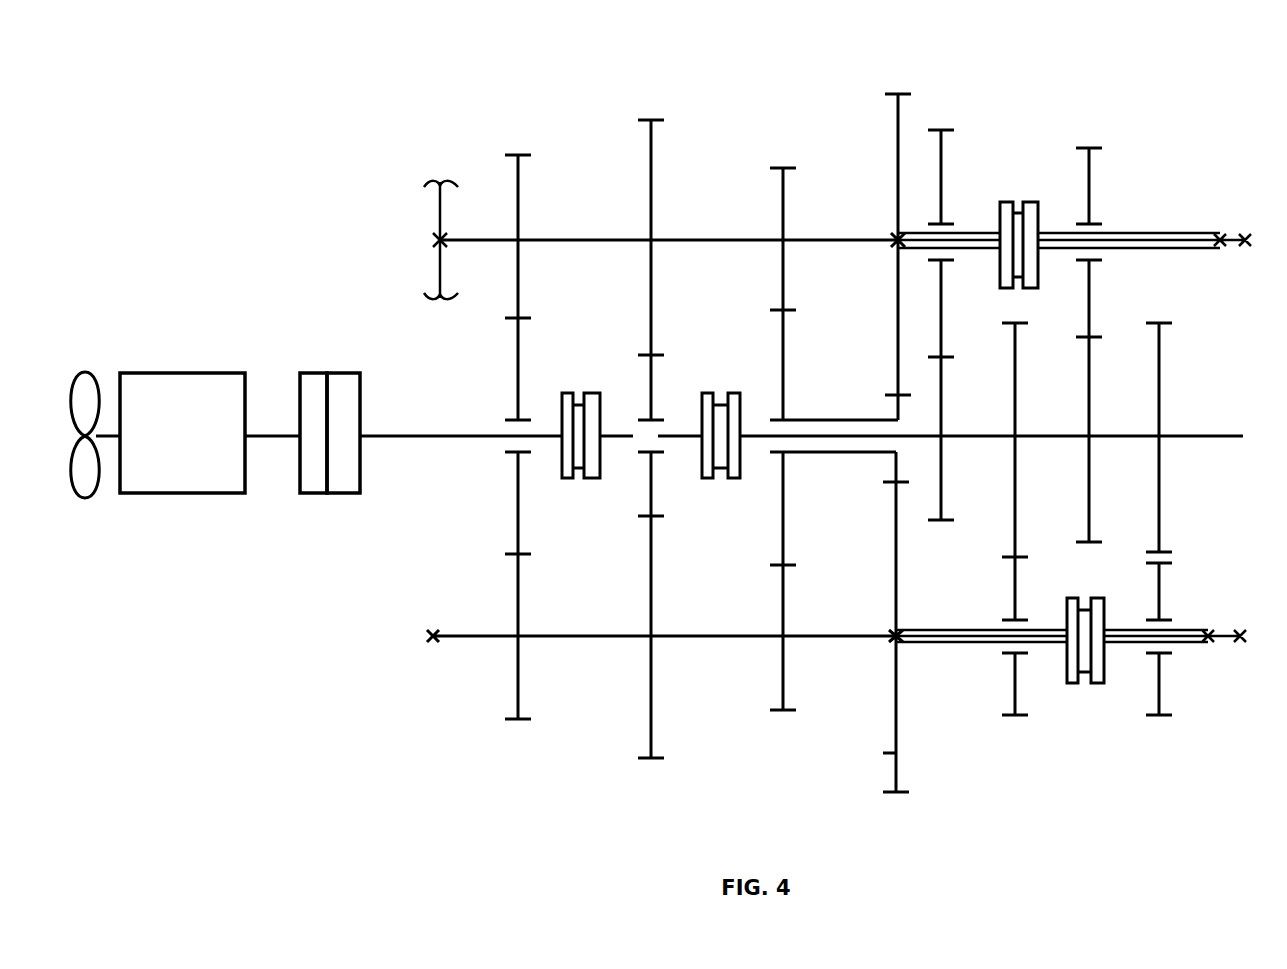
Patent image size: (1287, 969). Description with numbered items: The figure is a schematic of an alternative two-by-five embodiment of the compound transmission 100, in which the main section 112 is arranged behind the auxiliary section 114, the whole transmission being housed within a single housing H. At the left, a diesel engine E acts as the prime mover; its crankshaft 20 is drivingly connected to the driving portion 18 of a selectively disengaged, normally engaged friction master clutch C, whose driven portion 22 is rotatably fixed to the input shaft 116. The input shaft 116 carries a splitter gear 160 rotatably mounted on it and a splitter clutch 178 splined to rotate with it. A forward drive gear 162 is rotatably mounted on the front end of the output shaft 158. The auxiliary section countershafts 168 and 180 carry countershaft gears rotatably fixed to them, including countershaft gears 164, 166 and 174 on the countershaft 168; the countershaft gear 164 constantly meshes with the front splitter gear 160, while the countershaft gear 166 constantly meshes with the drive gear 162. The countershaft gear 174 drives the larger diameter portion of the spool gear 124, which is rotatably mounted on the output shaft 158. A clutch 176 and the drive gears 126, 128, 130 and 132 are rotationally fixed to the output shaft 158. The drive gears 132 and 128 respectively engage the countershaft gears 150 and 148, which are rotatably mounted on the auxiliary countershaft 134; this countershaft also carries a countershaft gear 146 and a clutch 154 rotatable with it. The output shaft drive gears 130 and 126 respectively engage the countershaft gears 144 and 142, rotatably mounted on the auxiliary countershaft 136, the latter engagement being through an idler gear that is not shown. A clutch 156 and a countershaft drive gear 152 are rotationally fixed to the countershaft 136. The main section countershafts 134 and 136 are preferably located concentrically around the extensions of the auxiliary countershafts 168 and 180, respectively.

The compound transmission 100 is at (805, 434).
The main section 112 is at (995, 413).
The auxiliary section 114 is at (629, 439).
The input shaft 116 is at (404, 433).
The driving portion 18 is at (311, 494).
The engine crankshaft 20 is at (270, 433).
The driven portion 22 is at (340, 494).
The spool gear 124 is at (788, 544).
The drive gear 126 is at (1157, 413).
The drive gear 128 is at (1087, 525).
The drive gear 130 is at (1013, 385).
The drive gear 132 is at (942, 506).
The auxiliary countershaft 134 is at (1191, 251).
The auxiliary countershaft 136 is at (1195, 629).
The countershaft gear 142 is at (1162, 690).
The countershaft gear 144 is at (1012, 699).
The countershaft gear 146 is at (901, 125).
The countershaft gear 148 is at (1092, 207).
The countershaft gear 150 is at (944, 168).
The countershaft drive gear 152 is at (893, 762).
The clutch 154 is at (1006, 201).
The clutch 156 is at (1071, 685).
The output shaft 158 is at (1213, 433).
The splitter gear 160 is at (515, 512).
The forward drive gear 162 is at (654, 494).
The countershaft gear 164 is at (521, 186).
The countershaft gear 166 is at (654, 180).
The auxiliary section countershaft 168 is at (571, 243).
The countershaft gear 174 is at (786, 212).
The clutch 176 is at (712, 392).
The splitter clutch 178 is at (572, 392).
The auxiliary section countershaft 180 is at (702, 640).
The diesel engine E is at (182, 433).
The friction master clutch C is at (322, 423).
The housing H is at (437, 202).